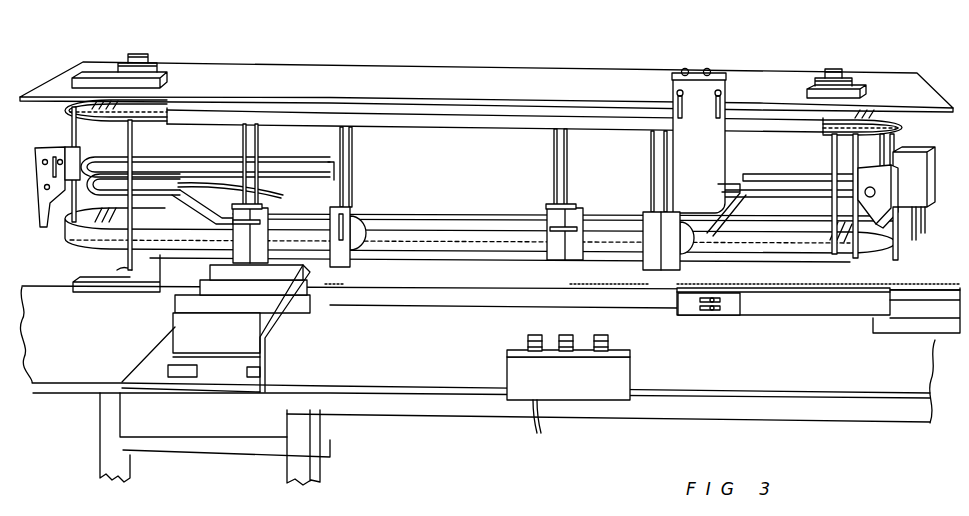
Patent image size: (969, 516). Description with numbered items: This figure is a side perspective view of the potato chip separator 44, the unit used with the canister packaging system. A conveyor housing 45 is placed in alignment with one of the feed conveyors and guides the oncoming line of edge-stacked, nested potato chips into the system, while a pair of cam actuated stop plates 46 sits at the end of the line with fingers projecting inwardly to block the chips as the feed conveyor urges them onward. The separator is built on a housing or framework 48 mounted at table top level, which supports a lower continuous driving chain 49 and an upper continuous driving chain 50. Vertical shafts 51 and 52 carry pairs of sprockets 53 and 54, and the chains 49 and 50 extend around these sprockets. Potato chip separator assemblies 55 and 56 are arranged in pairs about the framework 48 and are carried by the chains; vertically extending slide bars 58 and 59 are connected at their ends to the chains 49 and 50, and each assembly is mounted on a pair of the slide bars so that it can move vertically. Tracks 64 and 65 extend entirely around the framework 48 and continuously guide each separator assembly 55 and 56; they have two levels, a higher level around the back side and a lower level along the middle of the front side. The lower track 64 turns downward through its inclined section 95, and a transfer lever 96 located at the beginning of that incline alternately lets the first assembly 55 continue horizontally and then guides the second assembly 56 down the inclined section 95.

The potato chip separator 44 is at (950, 160).
The conveyor housing 45 is at (828, 308).
The cam actuated stop plates 46 is at (703, 308).
The framework 48 is at (270, 78).
The lower continuous driving chain 49 is at (78, 272).
The upper continuous driving chain 50 is at (130, 125).
The vertical shaft 51 is at (838, 70).
The vertical shaft 52 is at (136, 54).
The sprockets 53 is at (878, 110).
The sprockets 54 is at (82, 103).
The potato chip separator assembly 55 is at (233, 242).
The potato chip separator assembly 56 is at (360, 208).
The slide bar 58 is at (340, 150).
The slide bar 59 is at (353, 146).
The lower track 64 is at (150, 192).
The upper track 65 is at (158, 162).
The inclined section 95 is at (720, 214).
The transfer lever 96 is at (728, 184).